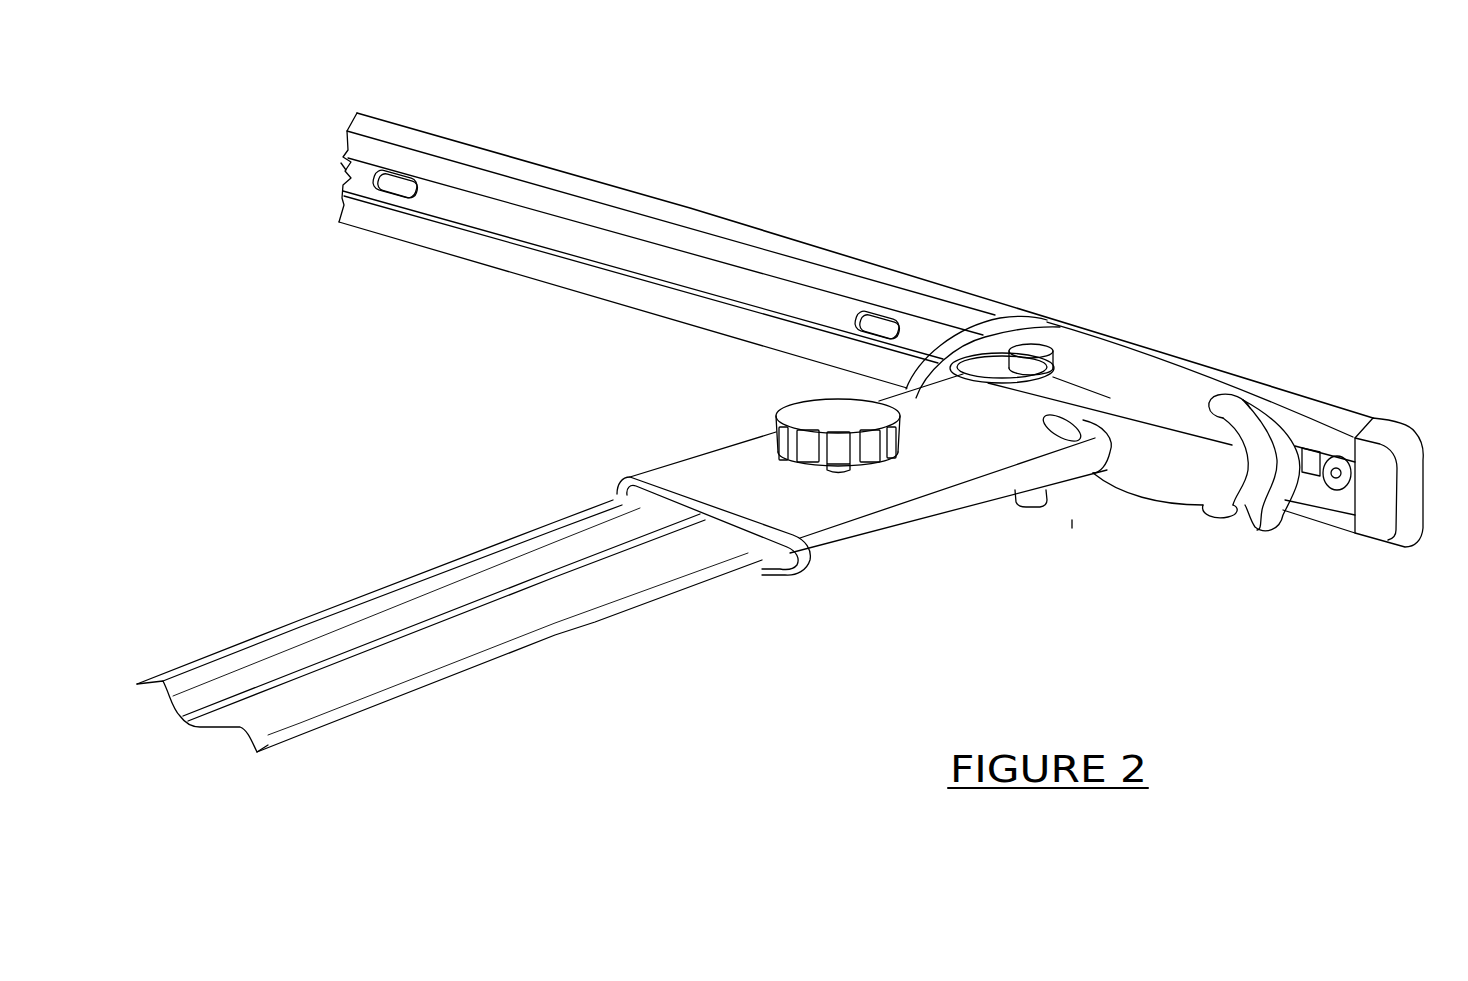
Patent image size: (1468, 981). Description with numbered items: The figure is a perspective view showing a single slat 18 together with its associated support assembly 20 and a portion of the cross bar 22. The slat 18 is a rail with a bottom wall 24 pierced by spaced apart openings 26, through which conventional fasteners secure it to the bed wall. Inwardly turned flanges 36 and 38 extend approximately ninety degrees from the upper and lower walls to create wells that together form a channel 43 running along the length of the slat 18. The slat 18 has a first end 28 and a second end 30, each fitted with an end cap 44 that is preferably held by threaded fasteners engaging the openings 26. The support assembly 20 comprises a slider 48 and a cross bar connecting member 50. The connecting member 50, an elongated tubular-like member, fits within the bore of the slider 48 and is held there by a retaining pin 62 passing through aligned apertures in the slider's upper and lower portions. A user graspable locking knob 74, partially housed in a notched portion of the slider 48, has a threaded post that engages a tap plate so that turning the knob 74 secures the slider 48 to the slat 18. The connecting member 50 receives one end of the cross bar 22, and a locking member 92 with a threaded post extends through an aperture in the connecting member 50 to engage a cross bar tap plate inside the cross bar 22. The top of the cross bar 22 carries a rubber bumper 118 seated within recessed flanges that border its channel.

The slat 18 is at (712, 205).
The support assembly 20 is at (1073, 514).
The cross bar 22 is at (468, 638).
The bottom wall 24 is at (350, 183).
The openings 26 is at (390, 184).
The first end 28 is at (1337, 515).
The second end 30 is at (483, 257).
The inwardly turned flange 36 is at (522, 195).
The inwardly turned flange 38 is at (643, 298).
The channel 43 is at (343, 168).
The end cap 44 is at (1413, 490).
The slider 48 is at (1170, 493).
The cross bar connecting member 50 is at (858, 548).
The retaining pin 62 is at (1035, 352).
The locking knob 74 is at (1247, 510).
The locking member 92 is at (830, 420).
The rubber bumper 118 is at (367, 625).